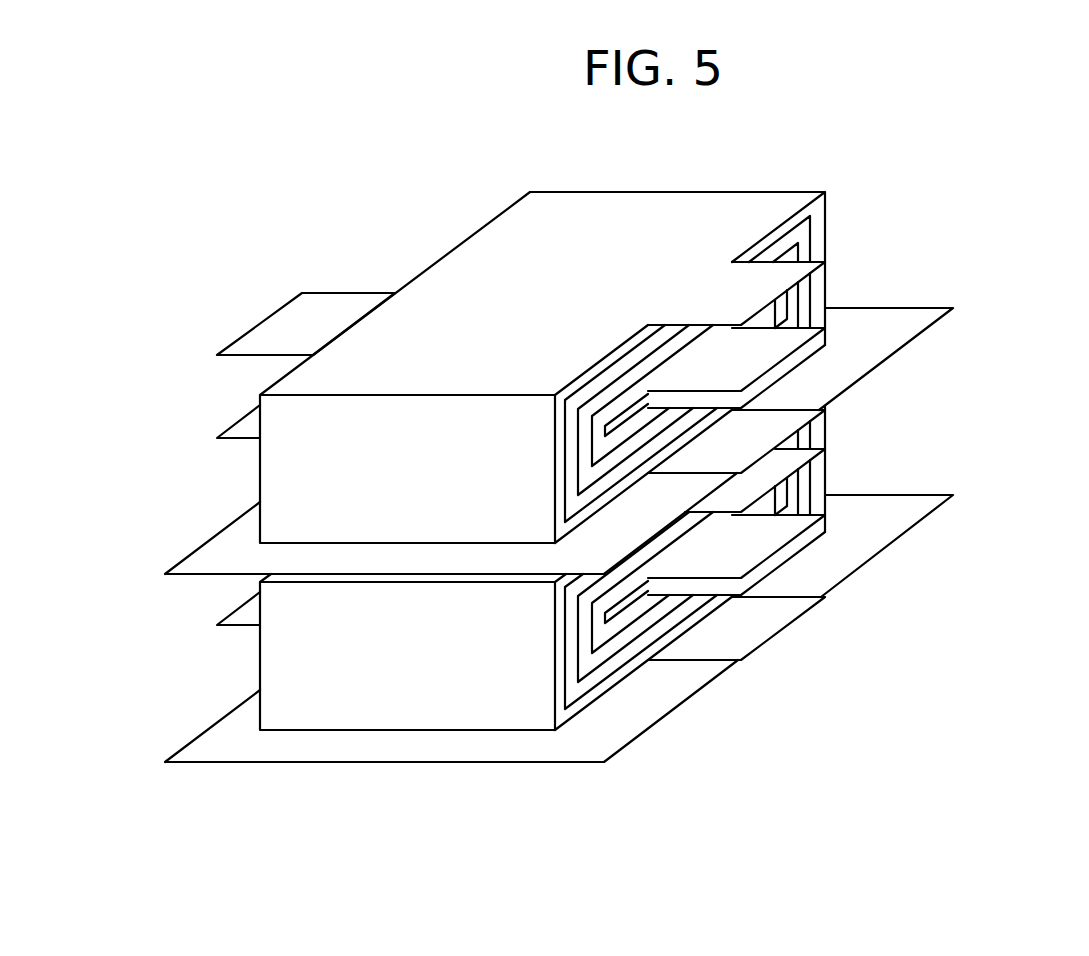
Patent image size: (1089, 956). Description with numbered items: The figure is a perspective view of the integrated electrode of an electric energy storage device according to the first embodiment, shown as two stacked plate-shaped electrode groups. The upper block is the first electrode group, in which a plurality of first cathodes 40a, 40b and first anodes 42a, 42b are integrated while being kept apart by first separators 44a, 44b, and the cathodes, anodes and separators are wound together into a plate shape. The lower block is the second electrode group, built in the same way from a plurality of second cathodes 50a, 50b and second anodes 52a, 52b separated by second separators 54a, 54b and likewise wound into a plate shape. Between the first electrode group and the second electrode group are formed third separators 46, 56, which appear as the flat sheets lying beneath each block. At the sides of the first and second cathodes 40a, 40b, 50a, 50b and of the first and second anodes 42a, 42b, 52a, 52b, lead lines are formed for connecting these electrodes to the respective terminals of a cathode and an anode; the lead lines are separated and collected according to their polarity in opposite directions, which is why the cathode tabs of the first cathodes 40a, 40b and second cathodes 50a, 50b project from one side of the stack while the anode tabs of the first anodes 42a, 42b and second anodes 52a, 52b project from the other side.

The first cathode 40a is at (827, 257).
The first cathode 40b is at (827, 323).
The first anode 42a is at (265, 325).
The first anode 42b is at (242, 423).
The first separator 44a is at (790, 303).
The first separator 44b is at (778, 310).
The third separator 46 is at (887, 355).
The second cathode 50a is at (827, 437).
The second cathode 50b is at (827, 510).
The second anode 52a is at (603, 662).
The second anode 52b is at (240, 613).
The second separator 54a is at (790, 490).
The second separator 54b is at (778, 497).
The third separator 56 is at (887, 543).